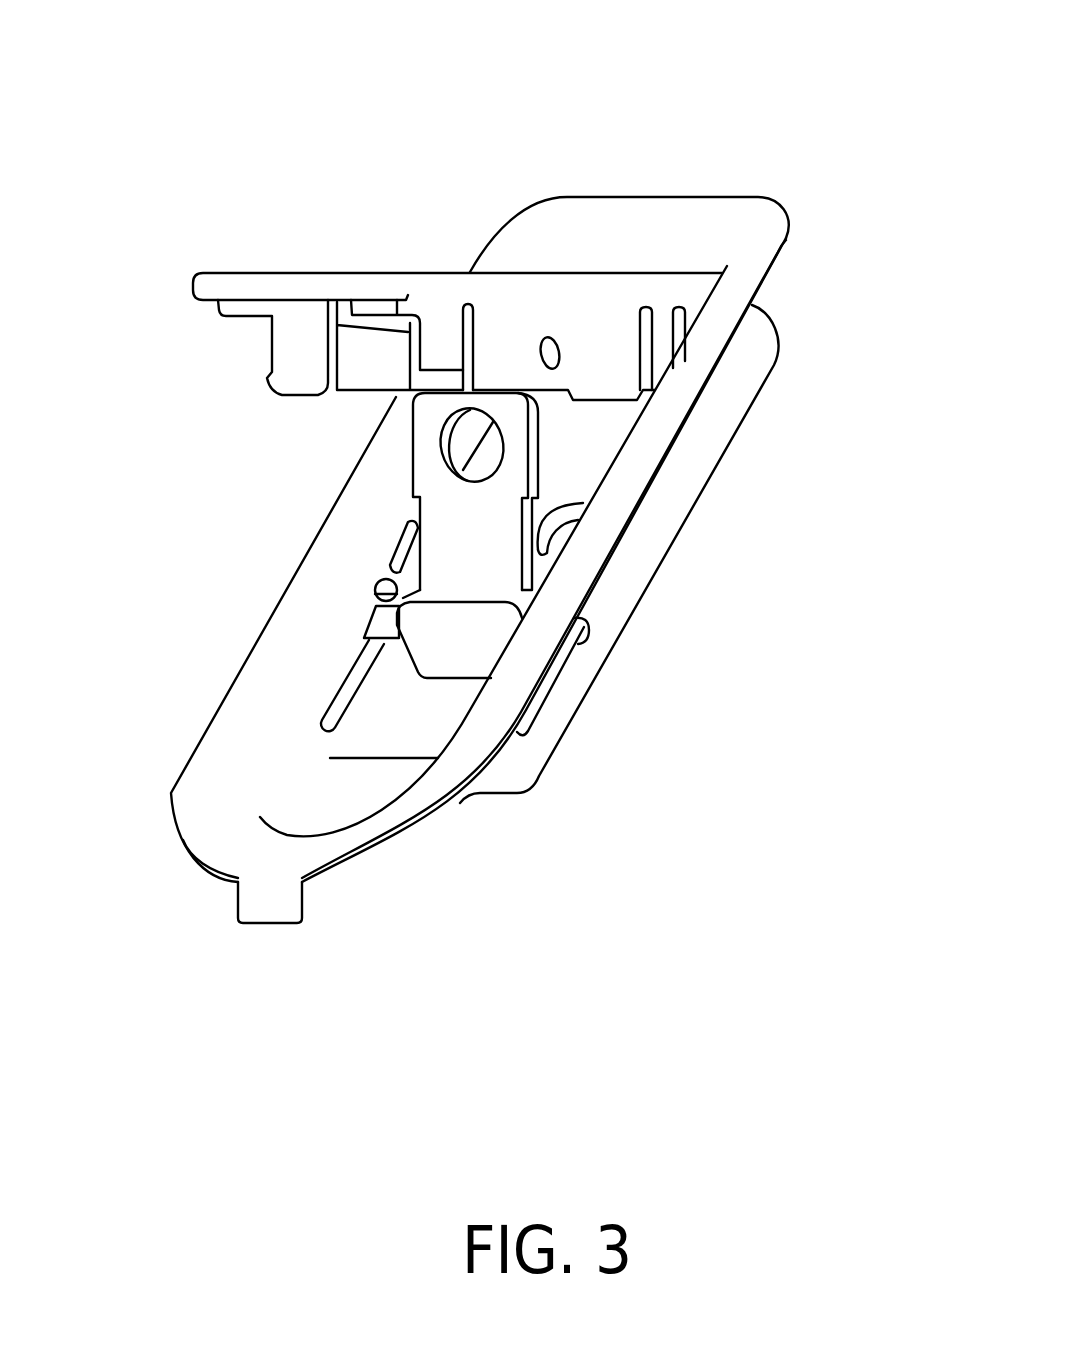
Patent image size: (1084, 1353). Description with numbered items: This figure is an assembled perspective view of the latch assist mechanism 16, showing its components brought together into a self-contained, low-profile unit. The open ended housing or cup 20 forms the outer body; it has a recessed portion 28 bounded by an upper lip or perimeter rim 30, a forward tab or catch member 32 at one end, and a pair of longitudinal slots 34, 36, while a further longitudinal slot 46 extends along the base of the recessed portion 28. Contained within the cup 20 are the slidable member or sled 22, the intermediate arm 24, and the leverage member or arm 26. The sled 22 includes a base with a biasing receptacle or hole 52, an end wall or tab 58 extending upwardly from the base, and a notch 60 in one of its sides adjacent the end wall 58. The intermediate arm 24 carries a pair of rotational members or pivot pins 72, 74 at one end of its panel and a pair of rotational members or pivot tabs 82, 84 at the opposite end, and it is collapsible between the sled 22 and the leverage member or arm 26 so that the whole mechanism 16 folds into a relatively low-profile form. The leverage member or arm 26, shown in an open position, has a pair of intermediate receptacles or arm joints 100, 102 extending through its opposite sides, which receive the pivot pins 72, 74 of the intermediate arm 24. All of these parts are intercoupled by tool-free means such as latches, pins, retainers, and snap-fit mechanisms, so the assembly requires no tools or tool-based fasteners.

The latch assist mechanism 16 is at (343, 105).
The open ended housing or cup 20 is at (818, 322).
The slidable member or sled 22 is at (608, 440).
The intermediate arm 24 is at (379, 466).
The leverage member or arm 26 is at (235, 246).
The recessed portion 28 is at (408, 738).
The upper lip or perimeter rim 30 is at (790, 228).
The forward tab or catch member 32 is at (258, 925).
The longitudinal slot 34 is at (320, 712).
The longitudinal slot 36 is at (527, 732).
The longitudinal slot 46 is at (565, 530).
The biasing receptacle or hole 52 is at (573, 505).
The end wall or tab 58 is at (487, 632).
The notch 60 is at (377, 583).
The rotational member or pivot pin 72 is at (556, 340).
The rotational member or pivot pin 74 is at (550, 352).
The rotational member or pivot tab 82 is at (373, 627).
The rotational member or pivot tab 84 is at (583, 637).
The intermediate receptacle or arm joint 100 is at (548, 338).
The intermediate receptacle or arm joint 102 is at (666, 244).